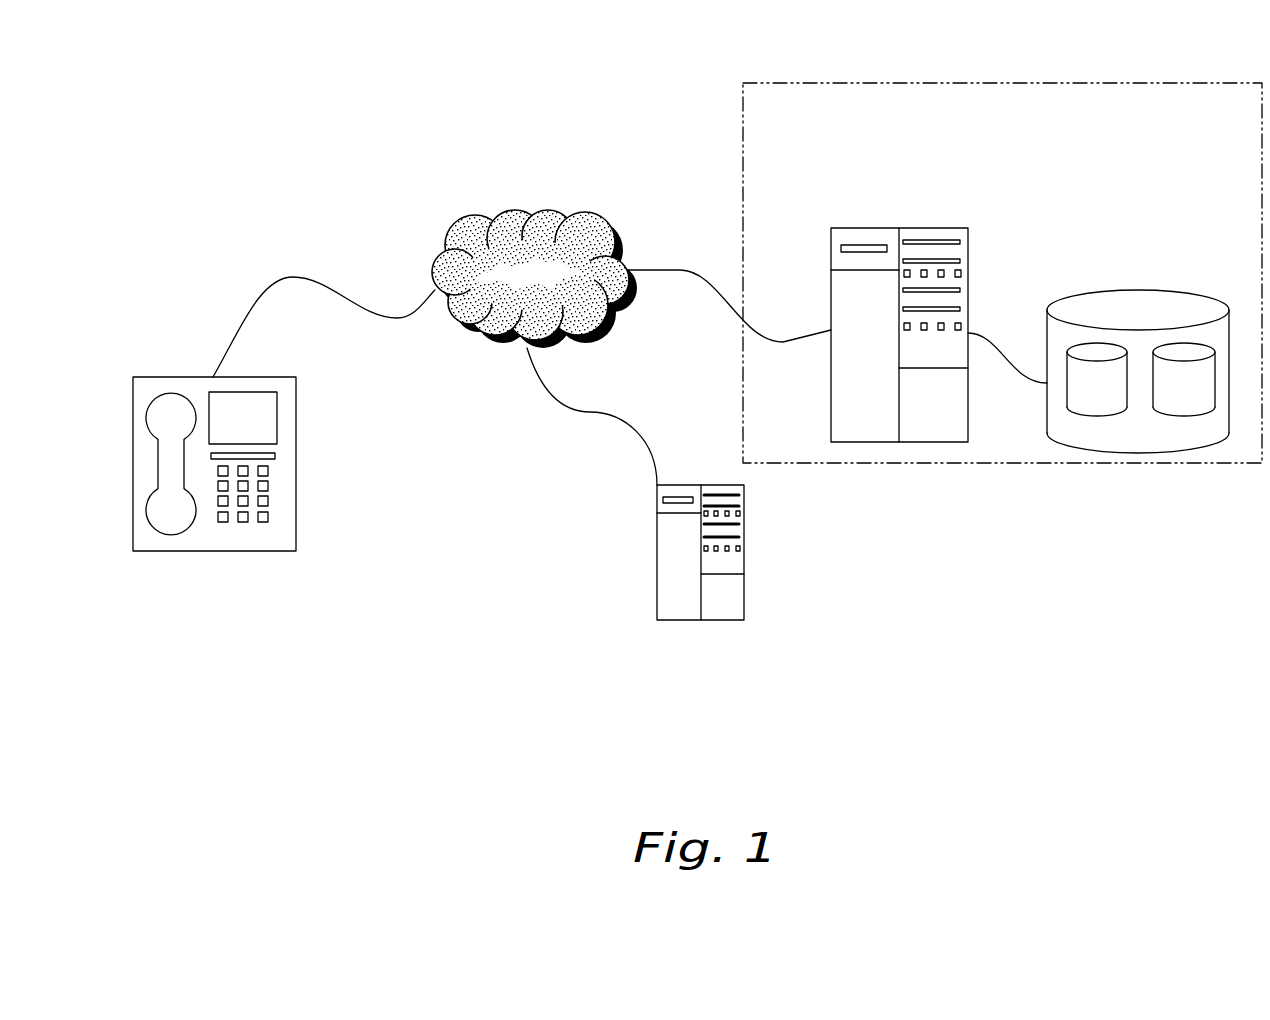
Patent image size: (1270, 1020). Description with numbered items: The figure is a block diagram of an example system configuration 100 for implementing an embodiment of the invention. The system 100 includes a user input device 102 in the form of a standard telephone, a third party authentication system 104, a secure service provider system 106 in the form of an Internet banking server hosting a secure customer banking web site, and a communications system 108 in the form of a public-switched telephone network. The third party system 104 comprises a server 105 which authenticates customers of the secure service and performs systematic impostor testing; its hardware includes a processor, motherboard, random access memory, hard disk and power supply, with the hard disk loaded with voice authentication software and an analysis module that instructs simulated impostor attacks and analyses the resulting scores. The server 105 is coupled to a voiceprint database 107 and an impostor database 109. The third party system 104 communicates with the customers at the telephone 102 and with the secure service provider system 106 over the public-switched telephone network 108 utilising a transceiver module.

The system configuration 100 is at (1012, 618).
The user input device 102 is at (299, 467).
The third party authentication system 104 is at (1000, 80).
The server 105 is at (900, 226).
The secure service provider system 106 is at (747, 573).
The voiceprint database 107 is at (1099, 419).
The communications system 108 is at (537, 210).
The impostor database 109 is at (1186, 419).